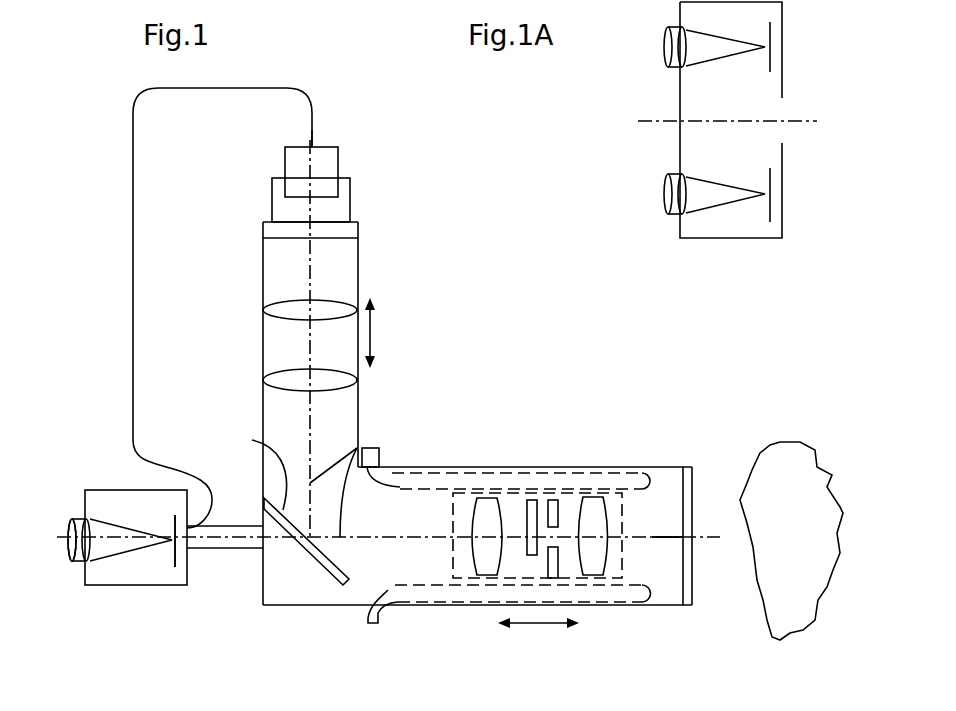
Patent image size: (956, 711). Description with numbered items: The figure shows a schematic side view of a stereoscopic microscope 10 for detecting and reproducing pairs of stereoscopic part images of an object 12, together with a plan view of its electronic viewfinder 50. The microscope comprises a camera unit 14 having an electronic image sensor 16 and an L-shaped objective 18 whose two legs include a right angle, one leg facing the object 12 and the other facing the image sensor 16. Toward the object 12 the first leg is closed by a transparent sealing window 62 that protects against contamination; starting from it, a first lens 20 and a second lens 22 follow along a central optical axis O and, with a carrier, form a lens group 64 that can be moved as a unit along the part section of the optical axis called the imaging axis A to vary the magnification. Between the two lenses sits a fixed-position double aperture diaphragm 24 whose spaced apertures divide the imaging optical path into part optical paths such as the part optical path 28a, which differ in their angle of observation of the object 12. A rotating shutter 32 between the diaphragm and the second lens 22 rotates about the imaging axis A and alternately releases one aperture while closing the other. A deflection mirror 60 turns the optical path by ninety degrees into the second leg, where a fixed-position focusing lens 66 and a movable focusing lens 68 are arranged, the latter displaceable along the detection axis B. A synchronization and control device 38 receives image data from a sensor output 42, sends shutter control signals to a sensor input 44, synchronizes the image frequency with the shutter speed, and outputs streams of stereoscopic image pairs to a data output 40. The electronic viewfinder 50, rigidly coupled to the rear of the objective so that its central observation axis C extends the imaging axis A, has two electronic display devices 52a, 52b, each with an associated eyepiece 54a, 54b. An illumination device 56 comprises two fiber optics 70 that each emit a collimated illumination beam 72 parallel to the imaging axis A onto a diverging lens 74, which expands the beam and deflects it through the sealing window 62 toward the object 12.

In FIG. 1, the stereoscopic microscope 10 is at (469, 267).
In FIG. 1, the object 12 is at (787, 462).
In FIG. 1, the camera unit 14 is at (259, 283).
In FIG. 1, the electronic image sensor 16 is at (272, 231).
In FIG. 1, the L-shaped objective 18 is at (418, 612).
In FIG. 1, the first lens 20 is at (594, 512).
In FIG. 1, the second lens 22 is at (488, 512).
In FIG. 1, the double aperture diaphragm 24 is at (558, 502).
In FIG. 1, the part optical path 28a is at (652, 537).
In FIG. 1, the rotating shutter 32 is at (532, 502).
In FIG. 1, the synchronization and control device 38 is at (284, 172).
In FIG. 1, the data output 40 is at (313, 143).
In FIG. 1, the sensor output 42 is at (351, 221).
In FIG. 1, the sensor input 44 is at (268, 223).
In FIG. 1, the electronic viewfinder 50 is at (152, 585).
In FIG. 1A, the electronic viewfinder 50 is at (737, 240).
In FIG. 1, the electronic display device 52a is at (187, 563).
In FIG. 1A, the electronic display device 52a is at (770, 185).
In FIG. 1A, the electronic display device 52b is at (770, 37).
In FIG. 1, the eyepiece 54a is at (77, 563).
In FIG. 1A, the eyepiece 54a is at (677, 217).
In FIG. 1, the eyepiece 54b is at (72, 540).
In FIG. 1A, the eyepiece 54b is at (672, 70).
In FIG. 1, the illumination device 56 is at (343, 622).
In FIG. 1, the deflection mirror 60 is at (252, 440).
In FIG. 1, the sealing window 62 is at (690, 483).
In FIG. 1, the lens group 64 is at (453, 557).
In FIG. 1, the fixed-position focusing lens 66 is at (275, 381).
In FIG. 1, the movable focusing lens 68 is at (275, 311).
In FIG. 1, the fiber optics 70 is at (373, 450).
In FIG. 1, the illumination beam 72 is at (432, 480).
In FIG. 1, the diverging lens 74 is at (644, 476).
In FIG. 1, the imaging axis A is at (711, 537).
In FIG. 1, the detection axis B is at (312, 283).
In FIG. 1, the central observation axis C is at (63, 537).
In FIG. 1A, the central observation axis C is at (795, 118).
In FIG. 1, the central optical axis O is at (357, 448).